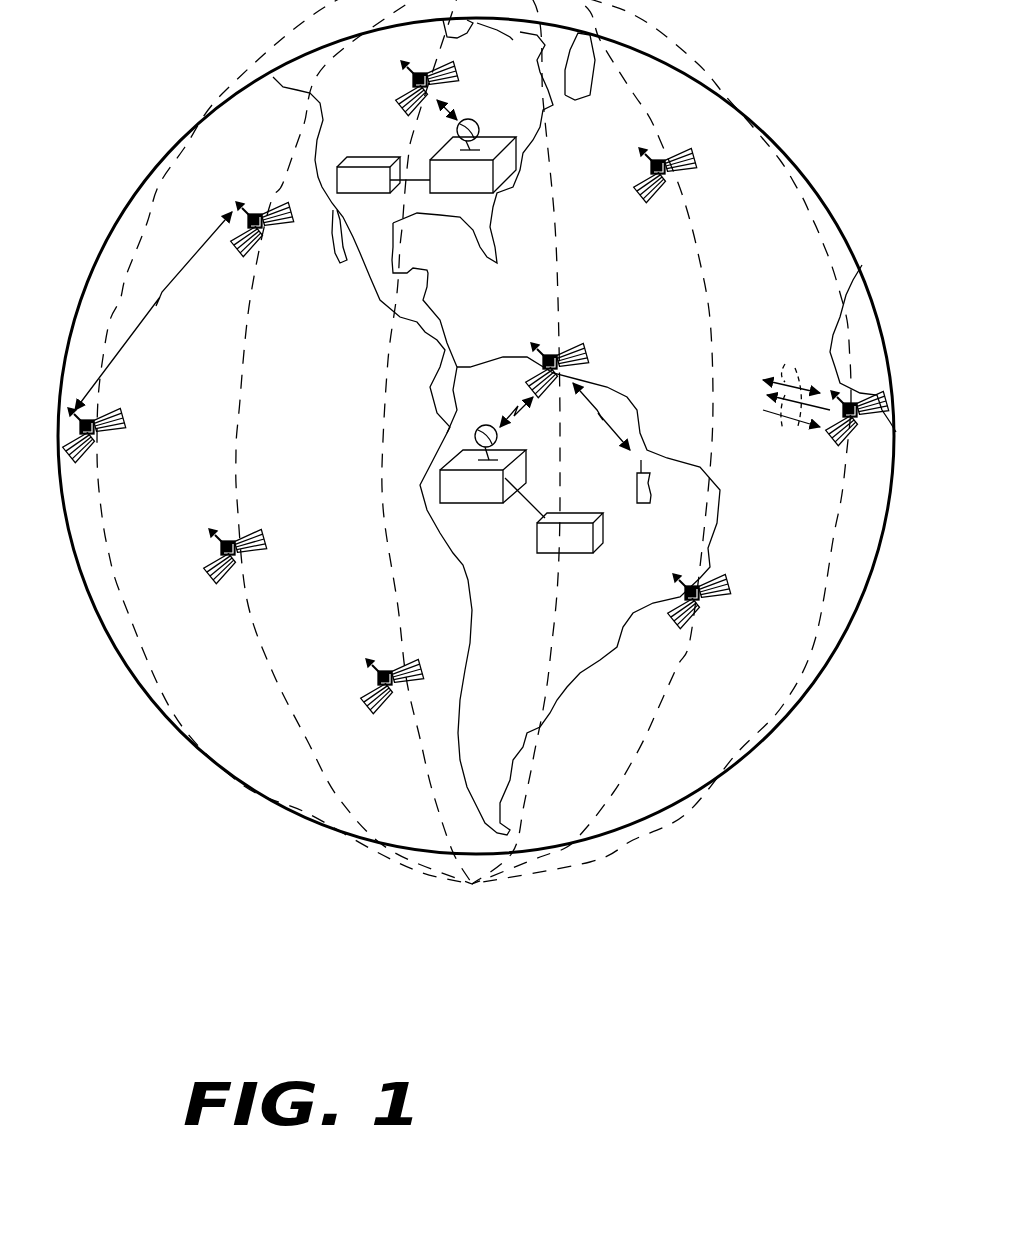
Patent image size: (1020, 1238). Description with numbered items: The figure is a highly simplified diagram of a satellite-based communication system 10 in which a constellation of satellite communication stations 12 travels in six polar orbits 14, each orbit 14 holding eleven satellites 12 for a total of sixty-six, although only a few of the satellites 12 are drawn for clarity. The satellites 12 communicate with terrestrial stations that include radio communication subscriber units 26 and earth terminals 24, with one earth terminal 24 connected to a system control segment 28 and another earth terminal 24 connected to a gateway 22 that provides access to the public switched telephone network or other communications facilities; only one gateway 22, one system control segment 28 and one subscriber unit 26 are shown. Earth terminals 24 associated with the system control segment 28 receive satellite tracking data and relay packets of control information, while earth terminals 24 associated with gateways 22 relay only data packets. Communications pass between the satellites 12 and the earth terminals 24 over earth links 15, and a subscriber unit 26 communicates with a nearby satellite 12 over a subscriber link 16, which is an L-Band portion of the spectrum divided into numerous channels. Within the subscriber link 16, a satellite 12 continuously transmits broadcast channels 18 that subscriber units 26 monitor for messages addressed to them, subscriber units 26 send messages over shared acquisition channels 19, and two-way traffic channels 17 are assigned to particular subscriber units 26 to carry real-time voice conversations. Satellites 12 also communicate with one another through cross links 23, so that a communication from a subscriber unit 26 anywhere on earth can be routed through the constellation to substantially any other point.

The communication system 10 is at (472, 988).
The satellite communication station 12 is at (410, 110).
The polar orbit 14 is at (288, 144).
The earth link 15 is at (516, 410).
The subscriber link 16 is at (593, 407).
The traffic channel 17 is at (784, 378).
The broadcast channel 18 is at (764, 397).
The acquisition channel 19 is at (781, 415).
The gateway 22 is at (578, 554).
The cross link 23 is at (168, 295).
The earth terminal 24 is at (500, 137).
The subscriber unit 26 is at (640, 503).
The system control segment 28 is at (352, 194).